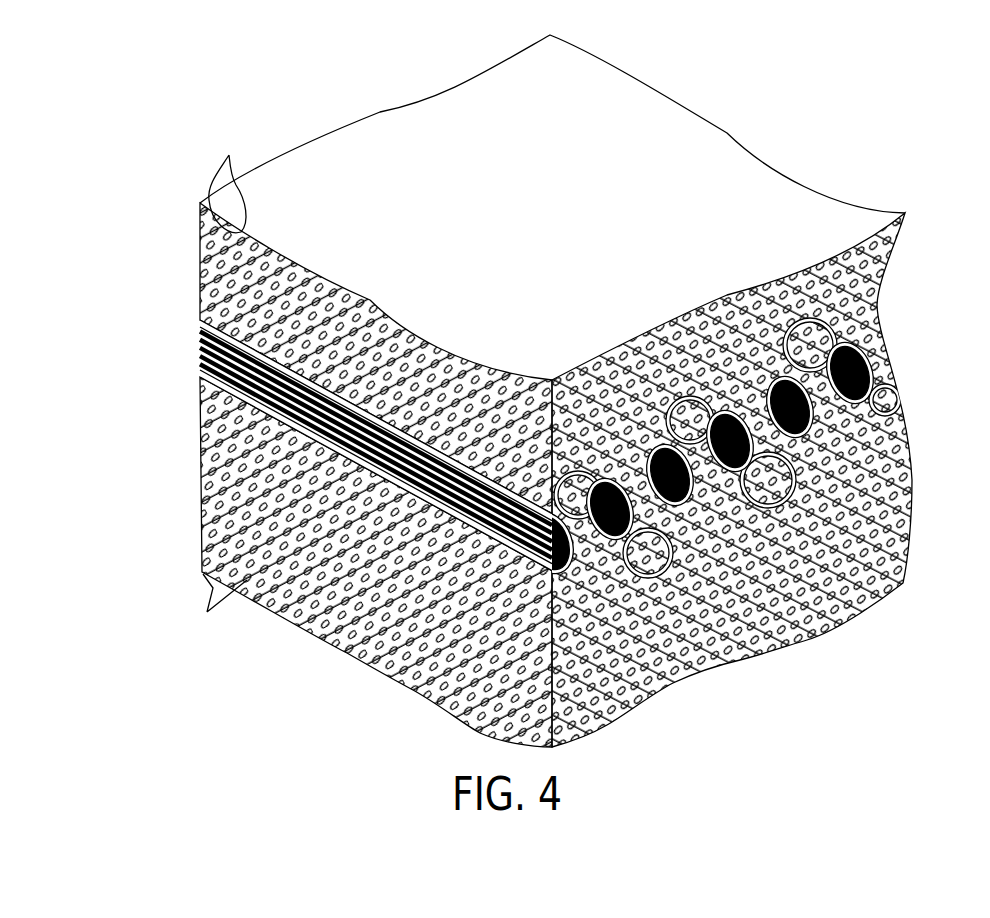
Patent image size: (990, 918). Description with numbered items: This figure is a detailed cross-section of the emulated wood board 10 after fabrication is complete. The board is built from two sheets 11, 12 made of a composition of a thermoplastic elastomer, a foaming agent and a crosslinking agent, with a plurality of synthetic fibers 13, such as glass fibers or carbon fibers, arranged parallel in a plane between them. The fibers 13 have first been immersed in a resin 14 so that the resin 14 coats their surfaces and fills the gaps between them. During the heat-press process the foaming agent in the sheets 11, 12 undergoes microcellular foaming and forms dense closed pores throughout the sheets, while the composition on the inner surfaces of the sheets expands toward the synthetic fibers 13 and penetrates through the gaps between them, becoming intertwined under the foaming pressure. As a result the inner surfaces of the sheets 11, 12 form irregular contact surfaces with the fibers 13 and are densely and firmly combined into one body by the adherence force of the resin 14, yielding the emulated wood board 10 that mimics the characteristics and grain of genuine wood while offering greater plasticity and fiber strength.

The emulated wood board 10 is at (511, 391).
The sheet 11 is at (202, 497).
The sheet 12 is at (202, 278).
The synthetic fibers 13 is at (130, 518).
The resin 14 is at (202, 332).